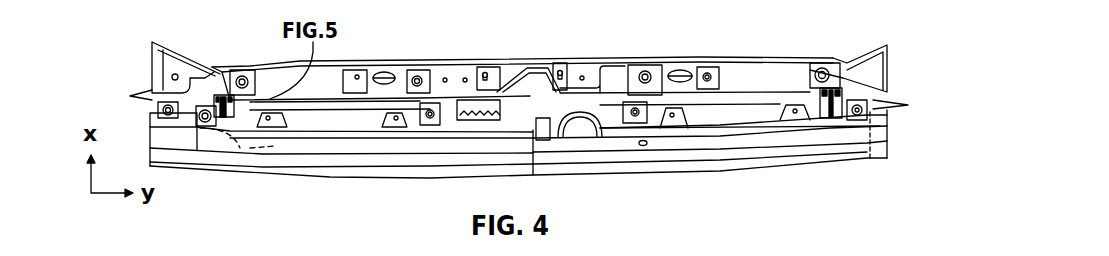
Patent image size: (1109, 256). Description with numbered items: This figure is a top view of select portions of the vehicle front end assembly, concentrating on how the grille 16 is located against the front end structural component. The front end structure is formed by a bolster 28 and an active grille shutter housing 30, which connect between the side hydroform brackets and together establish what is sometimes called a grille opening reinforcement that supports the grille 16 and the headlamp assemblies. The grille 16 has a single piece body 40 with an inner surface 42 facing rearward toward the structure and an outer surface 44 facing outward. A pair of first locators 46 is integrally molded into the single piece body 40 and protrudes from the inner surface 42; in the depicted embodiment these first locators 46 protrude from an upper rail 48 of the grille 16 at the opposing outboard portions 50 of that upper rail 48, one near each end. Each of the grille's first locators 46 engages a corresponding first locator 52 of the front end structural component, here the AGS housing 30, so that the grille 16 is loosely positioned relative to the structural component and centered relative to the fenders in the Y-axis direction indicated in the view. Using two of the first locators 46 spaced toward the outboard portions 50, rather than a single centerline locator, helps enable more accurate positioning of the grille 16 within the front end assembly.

The grille 16 is at (300, 158).
The bolster 28 is at (577, 68).
The active grille shutter (AGS) housing 30 is at (615, 80).
The single piece body 40 is at (263, 168).
The inner surface 42 is at (365, 125).
The outer surface 44 is at (366, 165).
The first locators 46 is at (225, 118).
The upper rail 48 is at (422, 152).
The outboard portions 50 is at (192, 152).
The first locators 52 is at (218, 94).